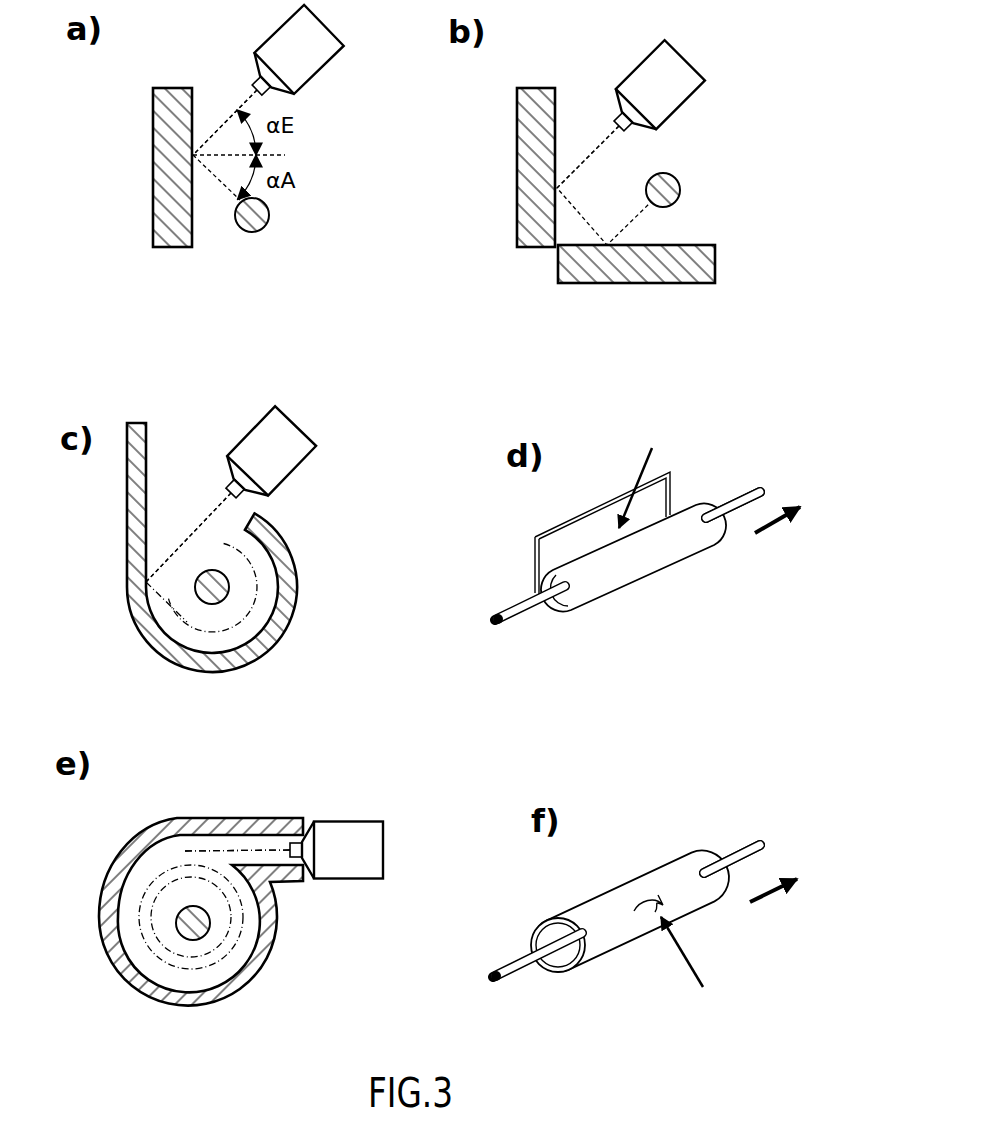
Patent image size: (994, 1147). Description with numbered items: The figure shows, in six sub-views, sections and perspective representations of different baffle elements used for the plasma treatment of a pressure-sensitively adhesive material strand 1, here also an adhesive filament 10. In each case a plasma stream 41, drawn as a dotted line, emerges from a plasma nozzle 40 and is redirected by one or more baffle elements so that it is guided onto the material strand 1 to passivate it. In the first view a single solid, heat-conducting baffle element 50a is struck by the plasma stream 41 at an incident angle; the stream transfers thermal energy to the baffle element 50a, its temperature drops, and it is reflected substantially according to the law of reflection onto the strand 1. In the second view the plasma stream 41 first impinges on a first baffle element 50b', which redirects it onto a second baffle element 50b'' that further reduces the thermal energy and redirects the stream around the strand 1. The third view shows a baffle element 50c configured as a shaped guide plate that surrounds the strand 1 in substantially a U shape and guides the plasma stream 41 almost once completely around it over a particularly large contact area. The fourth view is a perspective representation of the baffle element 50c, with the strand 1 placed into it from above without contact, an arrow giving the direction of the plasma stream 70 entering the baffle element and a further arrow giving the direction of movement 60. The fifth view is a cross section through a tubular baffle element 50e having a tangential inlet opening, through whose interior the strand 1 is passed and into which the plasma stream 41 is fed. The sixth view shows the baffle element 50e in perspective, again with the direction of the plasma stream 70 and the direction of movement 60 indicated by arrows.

The strand of pressure sensitive adhesive material 1 is at (262, 233).
The adhesive filament 10 is at (752, 490).
The plasma nozzle 40 is at (256, 76).
The plasma stream 41 is at (220, 125).
The baffle element 50a is at (162, 86).
The baffle element 50b' is at (495, 167).
The baffle element 50b'' is at (639, 298).
The baffle element 50c is at (127, 532).
The baffle element 50e is at (118, 873).
The direction of movement 60 is at (783, 522).
The direction of plasma stream 70 is at (642, 458).